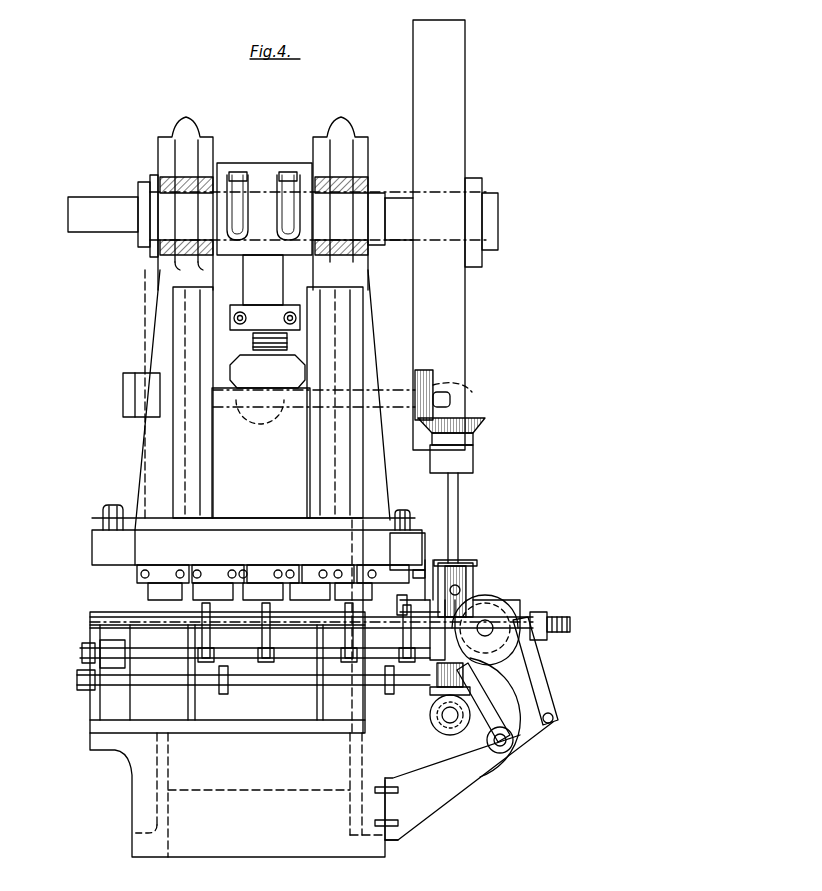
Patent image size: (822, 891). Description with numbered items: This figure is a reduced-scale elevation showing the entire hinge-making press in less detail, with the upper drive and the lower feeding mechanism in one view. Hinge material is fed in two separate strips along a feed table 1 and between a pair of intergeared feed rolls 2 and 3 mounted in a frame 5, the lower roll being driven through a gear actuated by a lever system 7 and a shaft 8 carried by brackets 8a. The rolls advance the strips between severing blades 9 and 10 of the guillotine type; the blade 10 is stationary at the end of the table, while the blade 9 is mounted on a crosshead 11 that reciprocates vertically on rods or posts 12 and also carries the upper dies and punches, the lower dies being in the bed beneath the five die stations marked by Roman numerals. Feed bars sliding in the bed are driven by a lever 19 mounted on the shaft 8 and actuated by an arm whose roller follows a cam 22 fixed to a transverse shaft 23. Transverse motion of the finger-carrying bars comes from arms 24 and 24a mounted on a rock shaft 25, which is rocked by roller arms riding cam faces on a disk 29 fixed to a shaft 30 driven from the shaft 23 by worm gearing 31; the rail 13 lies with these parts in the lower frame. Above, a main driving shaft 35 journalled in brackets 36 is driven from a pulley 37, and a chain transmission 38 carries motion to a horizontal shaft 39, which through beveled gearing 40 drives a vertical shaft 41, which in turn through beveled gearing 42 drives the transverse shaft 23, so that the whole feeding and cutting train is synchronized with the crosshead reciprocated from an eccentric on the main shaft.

The feed table 1 is at (502, 599).
The feed roll 2 is at (464, 600).
The feed roll 3 is at (458, 628).
The frame 5 is at (470, 578).
The lever system 7 is at (540, 663).
The shaft 8 is at (515, 742).
The brackets 8a is at (425, 782).
The severing blade 9 is at (420, 580).
The severing blade 10 is at (430, 601).
The crosshead 11 is at (258, 483).
The rods or posts 12 is at (113, 515).
The feed shaft 13 is at (286, 628).
The lever 19 is at (495, 705).
The cam 22 is at (430, 748).
The shaft 23 is at (482, 745).
The arm 24 is at (204, 647).
The arm 24a is at (263, 640).
The rock shaft 25 is at (250, 660).
The disk 29 is at (221, 692).
The shaft 30 is at (286, 684).
The worm gearing 31 is at (462, 677).
The main driving shaft 35 is at (107, 225).
The brackets 36 is at (160, 328).
The pulley 37 is at (458, 151).
The chain transmission 38 is at (148, 288).
The horizontal shaft 39 is at (225, 410).
The beveled gearing 40 is at (470, 425).
The vertical shaft 41 is at (458, 506).
The beveled gearing 42 is at (205, 358).